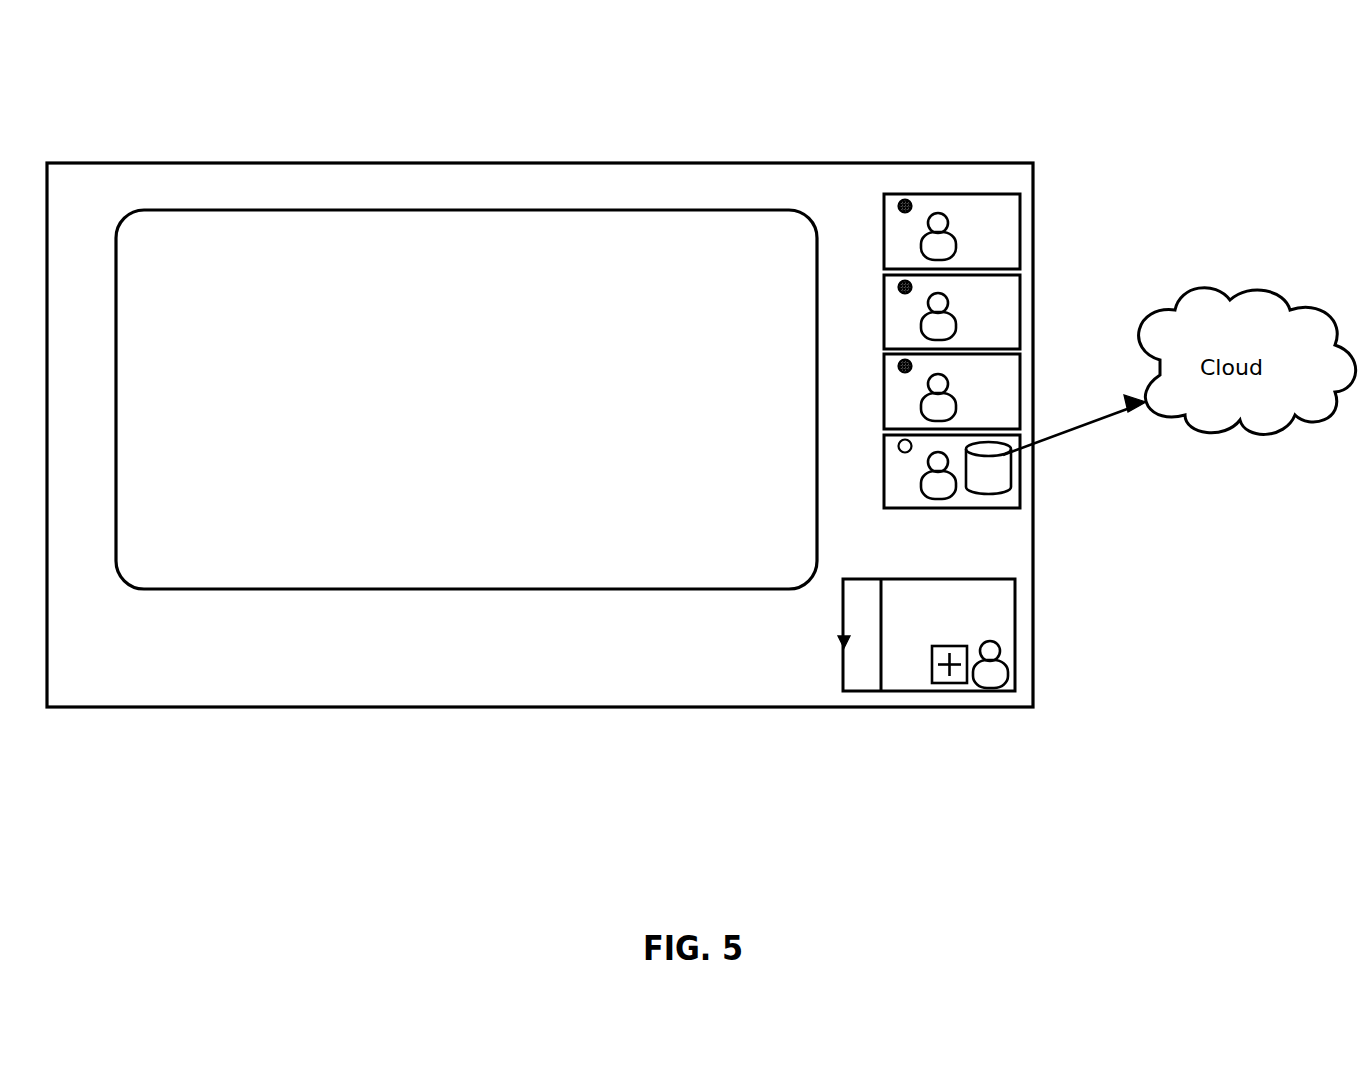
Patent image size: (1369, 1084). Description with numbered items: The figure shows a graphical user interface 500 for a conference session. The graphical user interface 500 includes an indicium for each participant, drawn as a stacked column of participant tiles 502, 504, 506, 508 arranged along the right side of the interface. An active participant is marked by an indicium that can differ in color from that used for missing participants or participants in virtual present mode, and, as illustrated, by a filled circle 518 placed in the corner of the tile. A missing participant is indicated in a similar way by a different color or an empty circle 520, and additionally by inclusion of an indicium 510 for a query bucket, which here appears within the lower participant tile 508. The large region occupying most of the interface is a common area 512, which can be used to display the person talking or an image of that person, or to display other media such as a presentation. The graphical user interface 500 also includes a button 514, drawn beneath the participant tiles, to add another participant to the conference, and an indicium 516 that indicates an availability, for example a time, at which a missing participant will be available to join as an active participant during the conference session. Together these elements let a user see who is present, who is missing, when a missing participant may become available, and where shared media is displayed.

The graphical user interface 500 is at (1313, 64).
The indicium for active participant 502 is at (1020, 240).
The indicium for active participant 504 is at (1020, 312).
The indicium for active participant 506 is at (1020, 400).
The indicium for participant 508 is at (1023, 480).
The indicium for query bucket 510 is at (990, 498).
The common area 512 is at (407, 210).
The button to add participant 514 is at (1015, 640).
The indicium of availability 516 is at (895, 480).
The filled circle 518 is at (892, 202).
The empty circle 520 is at (892, 443).